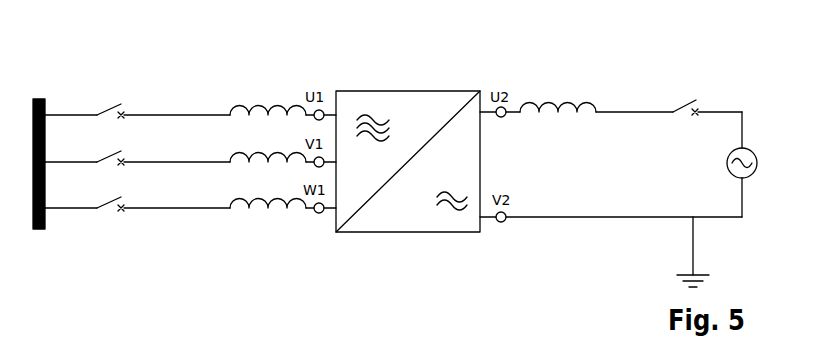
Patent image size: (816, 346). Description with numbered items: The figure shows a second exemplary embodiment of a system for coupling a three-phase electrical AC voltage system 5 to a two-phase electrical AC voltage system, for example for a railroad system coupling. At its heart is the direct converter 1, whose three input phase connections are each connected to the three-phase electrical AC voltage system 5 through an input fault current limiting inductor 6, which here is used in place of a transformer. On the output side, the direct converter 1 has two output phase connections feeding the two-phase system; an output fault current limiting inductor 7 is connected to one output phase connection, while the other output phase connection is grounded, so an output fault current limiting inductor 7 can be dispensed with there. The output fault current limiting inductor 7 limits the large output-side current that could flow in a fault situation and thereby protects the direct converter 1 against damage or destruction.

The three-phase electrical AC voltage system 5 is at (43, 84).
The input fault current limiting inductor 6 is at (256, 200).
The direct converter 1 is at (385, 91).
The output fault current limiting inductor 7 is at (525, 109).